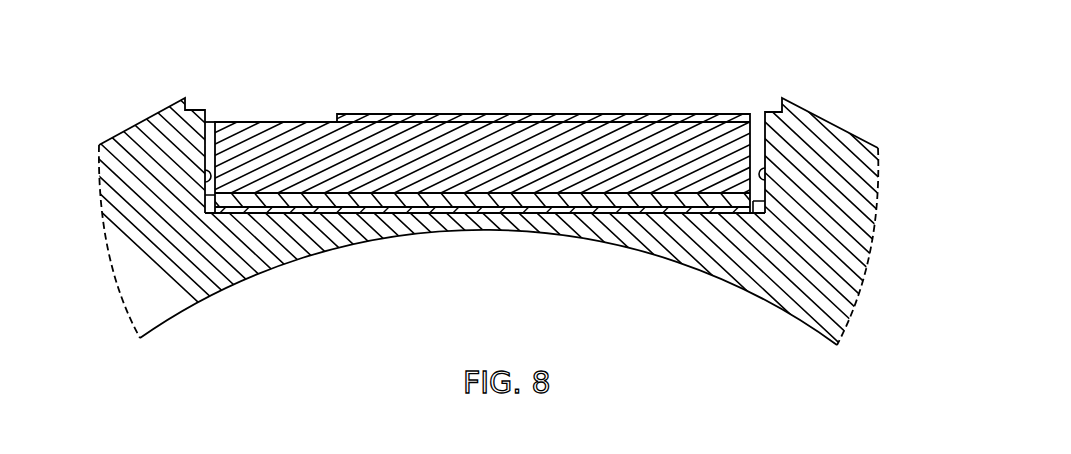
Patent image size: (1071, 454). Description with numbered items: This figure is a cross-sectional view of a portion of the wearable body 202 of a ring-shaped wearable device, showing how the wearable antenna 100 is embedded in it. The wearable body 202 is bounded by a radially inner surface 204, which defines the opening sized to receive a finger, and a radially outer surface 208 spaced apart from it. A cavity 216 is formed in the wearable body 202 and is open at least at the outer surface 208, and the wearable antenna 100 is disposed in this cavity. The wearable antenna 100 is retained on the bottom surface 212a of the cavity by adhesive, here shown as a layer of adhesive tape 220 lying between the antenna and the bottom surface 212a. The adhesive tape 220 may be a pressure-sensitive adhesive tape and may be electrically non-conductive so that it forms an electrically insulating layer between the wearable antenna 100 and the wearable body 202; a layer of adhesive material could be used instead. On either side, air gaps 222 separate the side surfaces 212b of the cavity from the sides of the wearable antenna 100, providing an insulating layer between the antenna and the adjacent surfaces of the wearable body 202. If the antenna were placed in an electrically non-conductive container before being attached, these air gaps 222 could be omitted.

The wearable antenna 100 is at (483, 115).
The wearable body 202 is at (825, 128).
The inner surface 204 is at (383, 235).
The outer surface 208 is at (138, 127).
The bottom surface of cavity 212a is at (602, 205).
The side surfaces of cavity 212b is at (203, 176).
The cavity 216 is at (207, 132).
The adhesive tape 220 is at (533, 208).
The air gaps 222 is at (207, 212).